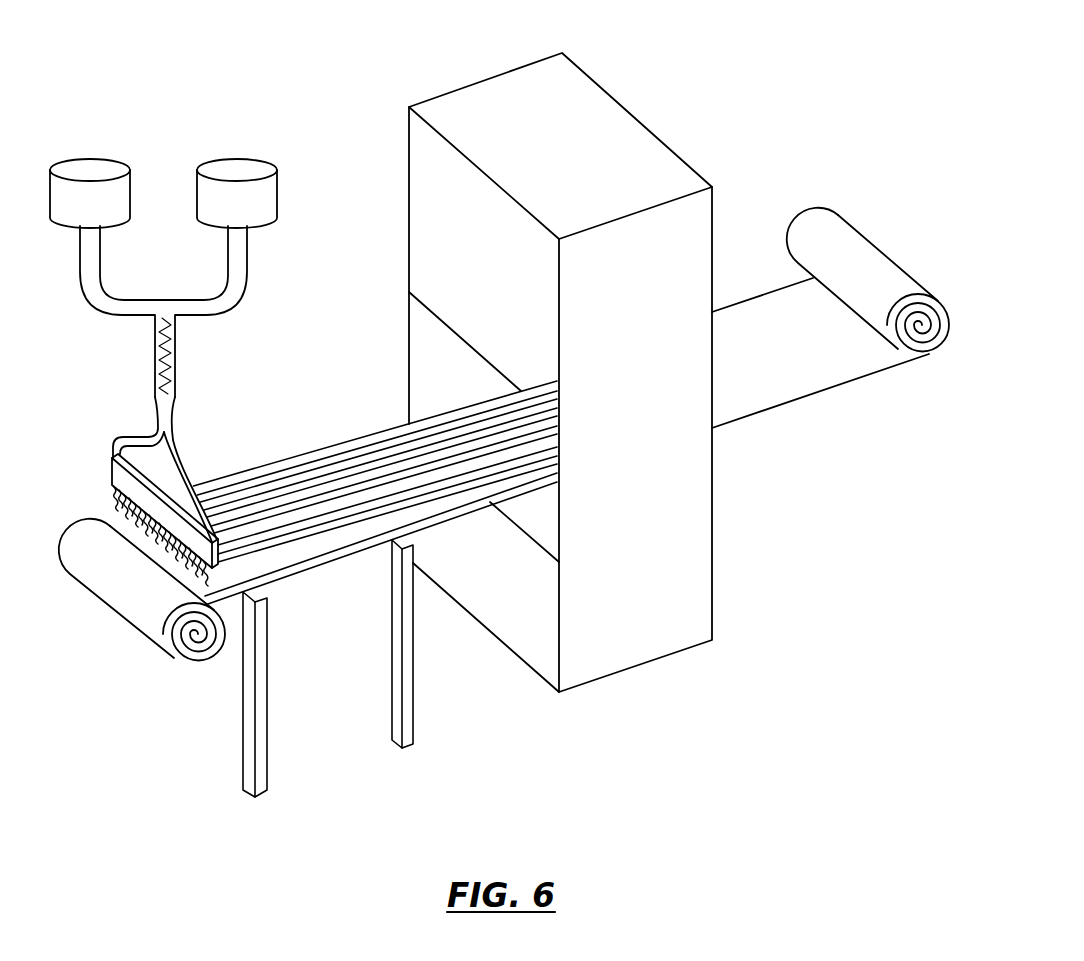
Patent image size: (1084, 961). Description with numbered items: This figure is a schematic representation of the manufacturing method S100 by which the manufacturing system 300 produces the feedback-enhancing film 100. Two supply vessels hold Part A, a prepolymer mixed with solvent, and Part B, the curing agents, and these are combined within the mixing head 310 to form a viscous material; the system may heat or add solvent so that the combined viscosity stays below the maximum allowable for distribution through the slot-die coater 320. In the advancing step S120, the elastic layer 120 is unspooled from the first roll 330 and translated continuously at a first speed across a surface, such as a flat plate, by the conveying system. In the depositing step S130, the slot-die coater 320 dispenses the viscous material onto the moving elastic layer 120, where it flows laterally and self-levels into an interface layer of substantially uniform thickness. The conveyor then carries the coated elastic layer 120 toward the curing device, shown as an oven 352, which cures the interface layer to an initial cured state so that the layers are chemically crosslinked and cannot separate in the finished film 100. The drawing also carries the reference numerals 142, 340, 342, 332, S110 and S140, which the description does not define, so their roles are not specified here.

The manufacturing system 300 is at (332, 117).
The mixing head 310 is at (177, 368).
The slot-die coater 320 is at (112, 462).
The first roll 330 is at (190, 645).
The elastic layer 120 is at (145, 612).
The fibers / strands 142 is at (166, 562).
The table 340 is at (318, 572).
The table top 342 is at (279, 575).
The oven 352 is at (630, 645).
The take-up roll 332 is at (918, 330).
The film 100 is at (787, 375).
The manufacturing method S100 is at (774, 64).
The mixing step S110 is at (150, 362).
The advancing step S120 is at (300, 504).
The depositing step S130 is at (99, 508).
The processing step S140 is at (636, 467).